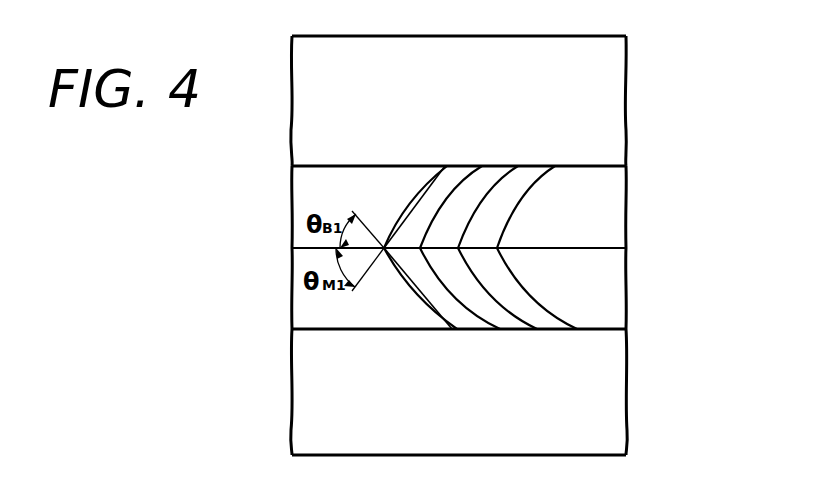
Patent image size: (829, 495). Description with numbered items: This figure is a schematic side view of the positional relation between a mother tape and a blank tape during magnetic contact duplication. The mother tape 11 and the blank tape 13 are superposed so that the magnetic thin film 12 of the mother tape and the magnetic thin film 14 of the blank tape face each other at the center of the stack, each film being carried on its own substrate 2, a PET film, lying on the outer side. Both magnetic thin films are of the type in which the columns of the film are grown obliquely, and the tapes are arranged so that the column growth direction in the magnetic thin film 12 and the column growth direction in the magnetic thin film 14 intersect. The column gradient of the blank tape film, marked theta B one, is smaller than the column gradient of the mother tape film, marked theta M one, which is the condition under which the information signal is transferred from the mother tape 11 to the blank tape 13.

The mother tape 11 is at (650, 108).
The substrate 2 is at (613, 137).
The magnetic thin film 12 is at (617, 200).
The magnetic thin film 14 is at (612, 283).
The blank tape 13 is at (660, 393).